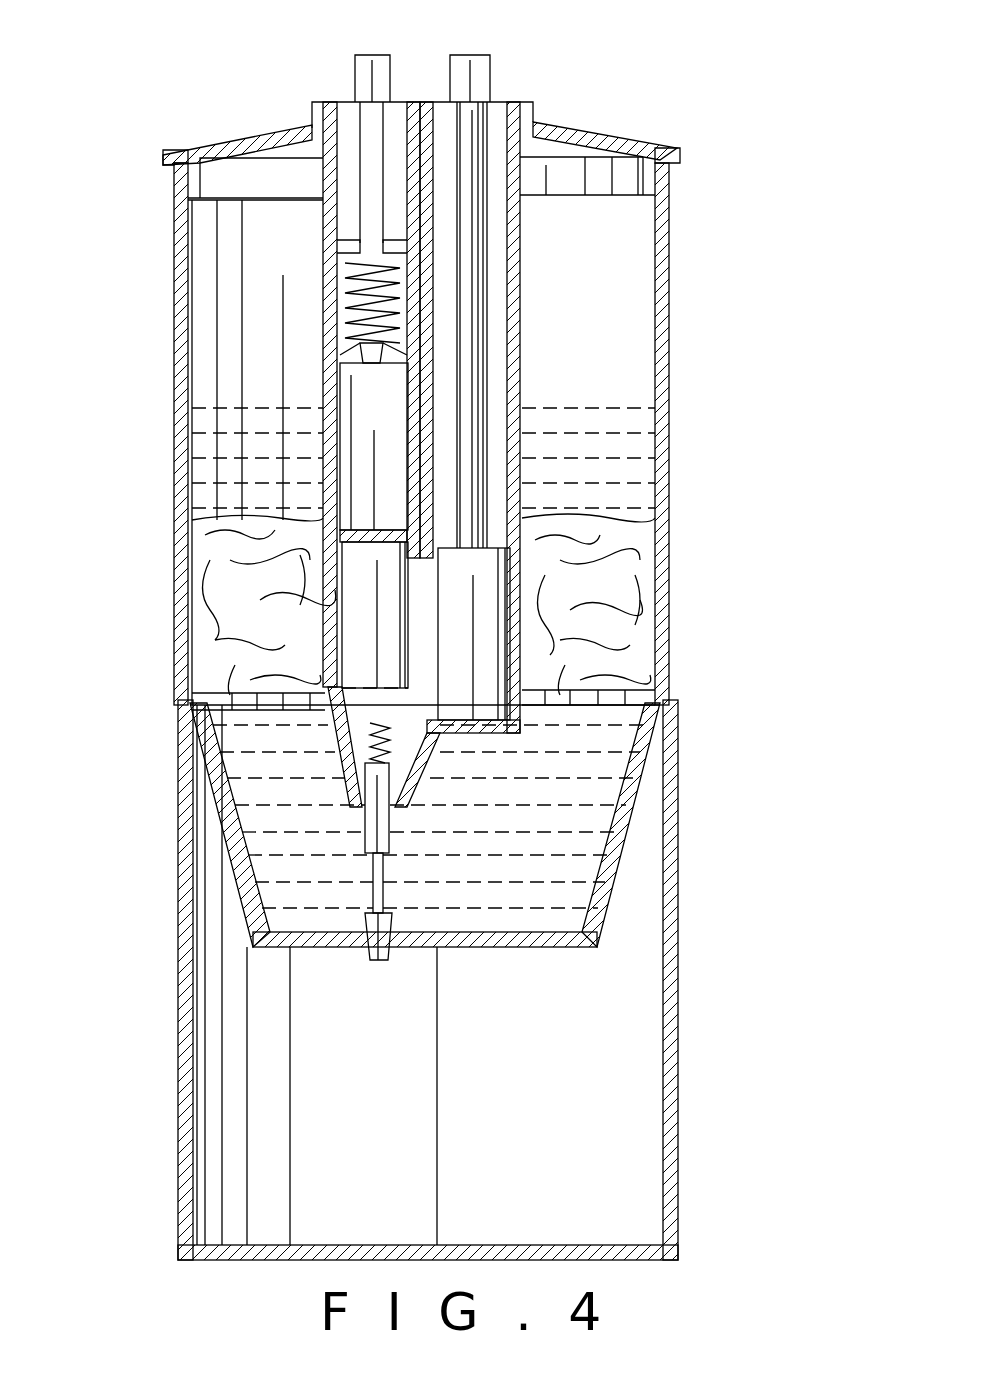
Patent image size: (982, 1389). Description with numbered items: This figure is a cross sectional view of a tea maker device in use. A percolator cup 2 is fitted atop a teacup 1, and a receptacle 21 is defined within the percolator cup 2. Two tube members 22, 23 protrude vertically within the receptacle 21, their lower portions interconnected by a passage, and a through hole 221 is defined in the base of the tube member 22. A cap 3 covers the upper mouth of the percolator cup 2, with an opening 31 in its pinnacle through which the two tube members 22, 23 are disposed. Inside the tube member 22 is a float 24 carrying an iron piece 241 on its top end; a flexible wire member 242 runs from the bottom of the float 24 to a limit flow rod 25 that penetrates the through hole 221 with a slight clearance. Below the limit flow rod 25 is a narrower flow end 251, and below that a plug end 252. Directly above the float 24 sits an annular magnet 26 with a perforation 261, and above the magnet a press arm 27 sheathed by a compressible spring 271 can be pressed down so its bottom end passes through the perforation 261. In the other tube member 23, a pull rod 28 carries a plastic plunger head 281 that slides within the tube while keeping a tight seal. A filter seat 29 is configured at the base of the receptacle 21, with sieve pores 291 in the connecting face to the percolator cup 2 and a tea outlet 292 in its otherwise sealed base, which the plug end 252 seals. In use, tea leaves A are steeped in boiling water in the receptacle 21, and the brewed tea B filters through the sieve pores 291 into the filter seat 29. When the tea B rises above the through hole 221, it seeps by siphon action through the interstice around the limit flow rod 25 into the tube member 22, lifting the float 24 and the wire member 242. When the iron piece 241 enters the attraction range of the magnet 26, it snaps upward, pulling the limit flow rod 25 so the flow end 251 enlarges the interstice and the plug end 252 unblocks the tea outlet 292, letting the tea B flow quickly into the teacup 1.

The teacup 1 is at (672, 873).
The percolator cup 2 is at (663, 452).
The cap 3 is at (607, 130).
The opening 31 is at (537, 103).
The receptacle 21 is at (625, 381).
The tube member 22 is at (330, 213).
The tube member 23 is at (515, 226).
The float 24 is at (357, 650).
The iron piece 241 is at (300, 533).
The wire member 242 is at (362, 737).
The limit flow rod 25 is at (375, 828).
The flow end 251 is at (380, 895).
The plug end 252 is at (365, 956).
The annular magnet 26 is at (352, 350).
The perforation 261 is at (355, 367).
The press arm 27 is at (370, 172).
The spring 271 is at (340, 306).
The pull rod 28 is at (480, 325).
The plunger head 281 is at (475, 610).
The filter seat 29 is at (640, 797).
The sieve pores 291 is at (597, 690).
The tea outlet 292 is at (455, 944).
The through hole 221 is at (355, 797).
The tea leaves A is at (600, 586).
The tea B is at (598, 776).